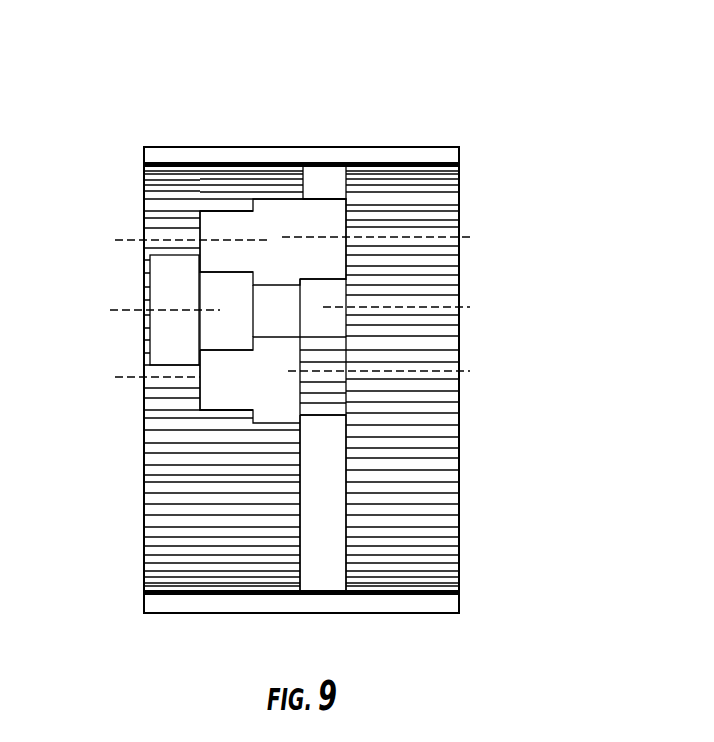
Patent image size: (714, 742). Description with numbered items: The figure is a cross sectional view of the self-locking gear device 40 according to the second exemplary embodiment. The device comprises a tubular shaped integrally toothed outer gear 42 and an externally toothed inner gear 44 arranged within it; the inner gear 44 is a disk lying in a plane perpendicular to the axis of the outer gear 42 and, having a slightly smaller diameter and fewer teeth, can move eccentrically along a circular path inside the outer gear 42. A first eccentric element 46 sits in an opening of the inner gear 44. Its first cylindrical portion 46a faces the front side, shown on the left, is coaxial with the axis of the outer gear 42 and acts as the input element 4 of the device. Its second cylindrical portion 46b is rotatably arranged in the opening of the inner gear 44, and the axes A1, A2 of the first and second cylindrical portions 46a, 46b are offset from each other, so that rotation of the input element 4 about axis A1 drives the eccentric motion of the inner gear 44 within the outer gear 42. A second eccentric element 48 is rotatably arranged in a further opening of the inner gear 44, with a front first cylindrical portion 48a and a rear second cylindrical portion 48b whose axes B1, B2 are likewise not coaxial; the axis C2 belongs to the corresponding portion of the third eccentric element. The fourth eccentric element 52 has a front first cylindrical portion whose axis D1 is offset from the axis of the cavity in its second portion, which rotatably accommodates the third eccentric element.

The self-locking gear device 40 is at (494, 104).
The tubular shaped integrally toothed outer gear 42 is at (428, 152).
The externally toothed inner gear 44 is at (325, 182).
The first eccentric element 46 is at (284, 365).
The first cylindrical portion 46a is at (242, 406).
The second cylindrical portion 46b is at (340, 411).
The second eccentric element 48 is at (287, 274).
The first cylindrical portion 48a is at (241, 241).
The second cylindrical portion 48b is at (340, 228).
The fourth eccentric element 52 is at (168, 280).
The input element 4 is at (203, 421).
The axis of the first cylindrical portion of the second eccentric element B1 is at (172, 244).
The axis of the second cylindrical portion of the second eccentric element B2 is at (398, 251).
The axis of the first cylindrical portion of the fourth eccentric element D1 is at (144, 325).
The axis of the second cylindrical portion of the third eccentric element C2 is at (418, 323).
The axis of the first cylindrical portion of the first eccentric element A1 is at (134, 390).
The axis of the second cylindrical portion of the first eccentric element A2 is at (401, 387).